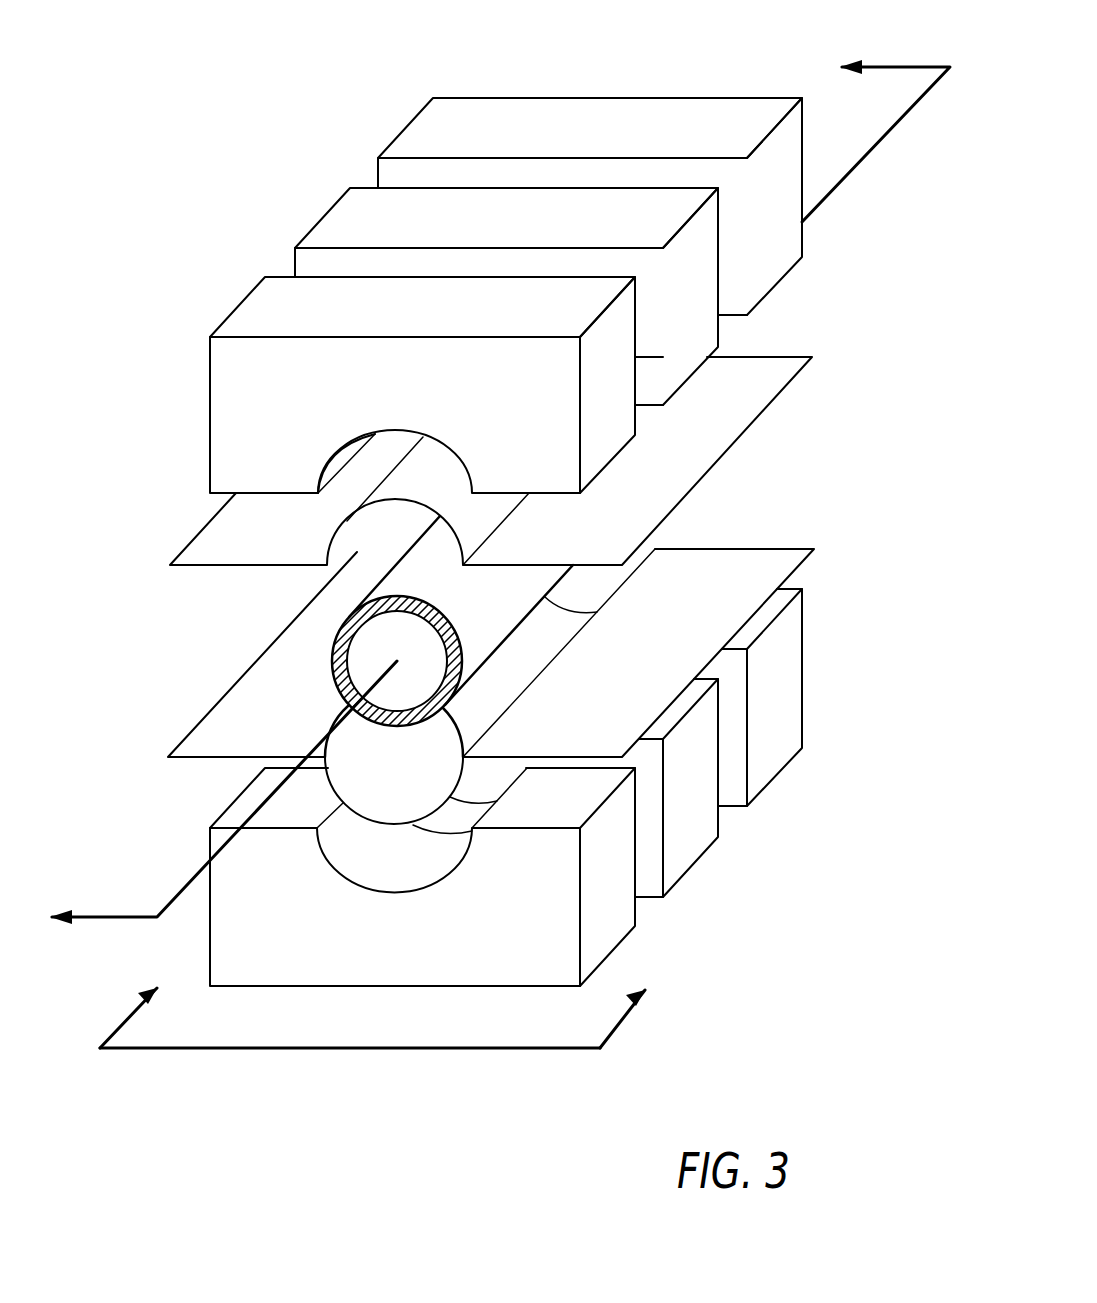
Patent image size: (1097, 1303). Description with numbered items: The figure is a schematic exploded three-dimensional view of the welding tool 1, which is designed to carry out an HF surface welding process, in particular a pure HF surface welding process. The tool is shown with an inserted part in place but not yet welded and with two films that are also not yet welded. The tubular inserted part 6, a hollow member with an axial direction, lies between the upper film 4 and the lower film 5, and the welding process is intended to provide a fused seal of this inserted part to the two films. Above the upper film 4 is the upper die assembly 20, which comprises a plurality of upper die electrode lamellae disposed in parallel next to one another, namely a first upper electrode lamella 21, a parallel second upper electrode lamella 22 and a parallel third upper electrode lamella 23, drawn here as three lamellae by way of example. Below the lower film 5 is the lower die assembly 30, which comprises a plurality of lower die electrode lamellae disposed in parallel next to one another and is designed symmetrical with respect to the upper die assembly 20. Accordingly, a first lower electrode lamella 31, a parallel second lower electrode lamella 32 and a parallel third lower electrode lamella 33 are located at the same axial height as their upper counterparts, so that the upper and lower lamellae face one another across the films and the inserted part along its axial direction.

The welding tool 1 is at (847, 408).
The upper film 4 is at (221, 543).
The lower film 5 is at (221, 742).
The tubular inserted part 6 is at (330, 662).
The upper die assembly 20 is at (186, 412).
The first upper electrode lamella 21 is at (258, 306).
The second upper electrode lamella 22 is at (345, 218).
The third upper electrode lamella 23 is at (425, 128).
The lower die assembly 30 is at (186, 823).
The first lower electrode lamella 31 is at (605, 920).
The second lower electrode lamella 32 is at (690, 828).
The third lower electrode lamella 33 is at (772, 740).